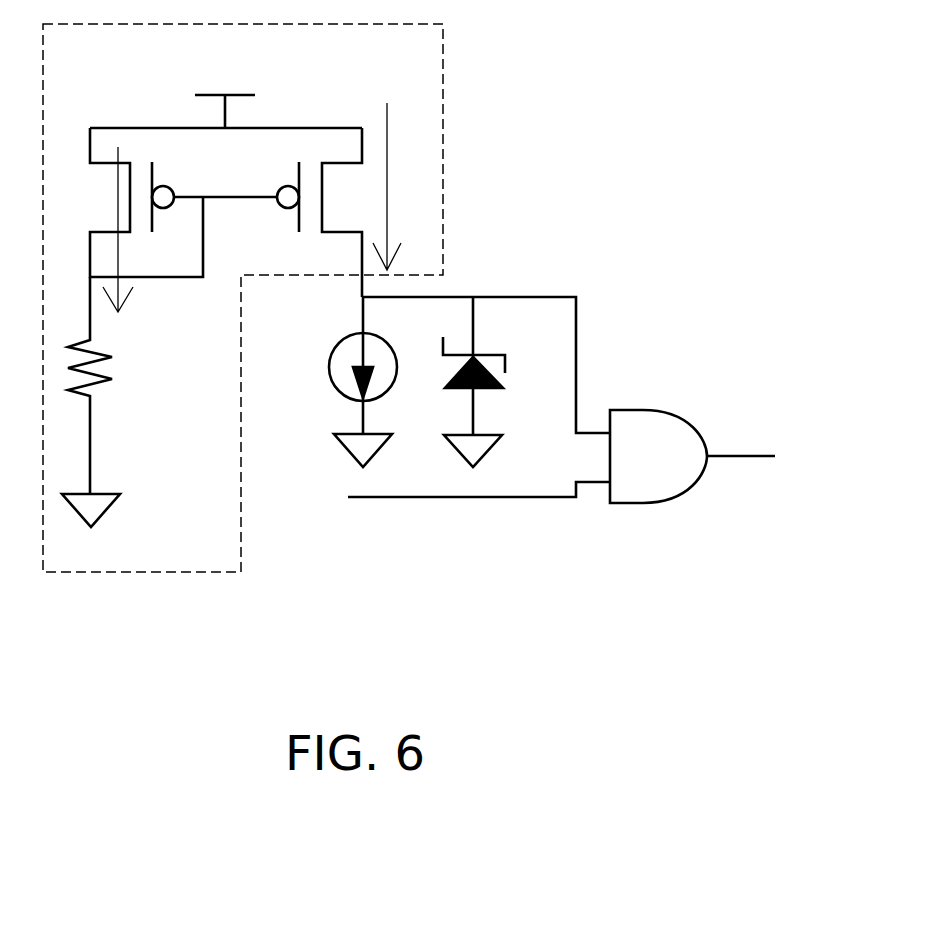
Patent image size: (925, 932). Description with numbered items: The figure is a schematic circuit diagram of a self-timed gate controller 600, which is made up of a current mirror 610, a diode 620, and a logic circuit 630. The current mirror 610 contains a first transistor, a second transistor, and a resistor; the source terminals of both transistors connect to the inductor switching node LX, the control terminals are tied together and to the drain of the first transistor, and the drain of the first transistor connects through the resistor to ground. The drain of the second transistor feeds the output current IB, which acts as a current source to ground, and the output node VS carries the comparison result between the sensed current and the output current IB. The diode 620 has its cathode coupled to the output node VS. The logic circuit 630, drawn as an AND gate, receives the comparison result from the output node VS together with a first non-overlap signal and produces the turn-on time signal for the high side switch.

The self-timed gate controller 600 is at (643, 597).
The current mirror 610 is at (443, 47).
The diode 620 is at (513, 410).
The logic circuit 630 is at (662, 410).